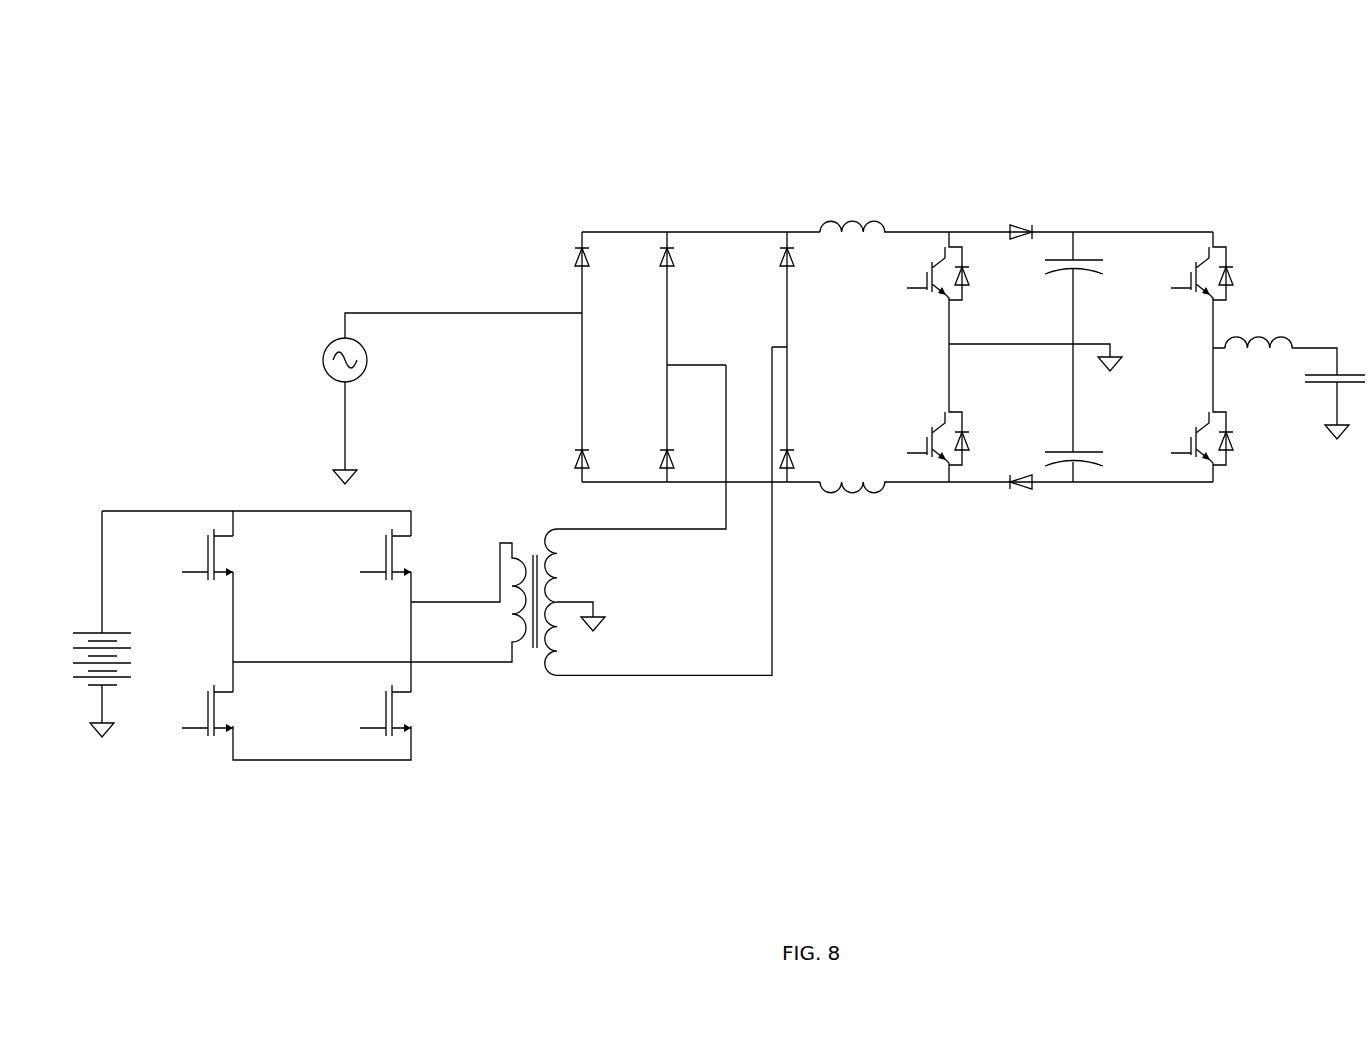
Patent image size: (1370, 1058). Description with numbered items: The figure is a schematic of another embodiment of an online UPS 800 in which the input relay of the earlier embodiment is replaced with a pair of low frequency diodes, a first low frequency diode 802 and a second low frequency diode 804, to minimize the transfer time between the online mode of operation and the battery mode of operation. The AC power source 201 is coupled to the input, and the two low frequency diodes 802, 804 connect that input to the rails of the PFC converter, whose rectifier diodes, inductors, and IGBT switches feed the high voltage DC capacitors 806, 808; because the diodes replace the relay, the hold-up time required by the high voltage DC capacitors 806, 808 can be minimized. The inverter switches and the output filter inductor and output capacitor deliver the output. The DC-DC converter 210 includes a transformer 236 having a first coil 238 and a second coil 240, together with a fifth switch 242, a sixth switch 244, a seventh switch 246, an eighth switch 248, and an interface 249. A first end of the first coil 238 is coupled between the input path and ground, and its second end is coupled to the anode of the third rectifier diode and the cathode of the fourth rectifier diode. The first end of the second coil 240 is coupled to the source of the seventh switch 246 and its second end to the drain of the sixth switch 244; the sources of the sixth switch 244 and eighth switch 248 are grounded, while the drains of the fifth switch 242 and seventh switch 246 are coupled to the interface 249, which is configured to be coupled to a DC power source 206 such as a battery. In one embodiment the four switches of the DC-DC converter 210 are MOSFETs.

The power conversion circuit 800 is at (168, 98).
The AC power source 201 is at (327, 352).
The DC power source 206 is at (102, 632).
The interface 249 is at (152, 512).
The fifth switch (SW5) 242 is at (208, 555).
The sixth switch (SW6) 244 is at (207, 717).
The seventh switch (SW7) 246 is at (387, 557).
The eighth switch (SW8) 248 is at (387, 717).
The DC-DC converter 210 is at (560, 783).
The transformer 236 is at (504, 533).
The first coil 238 is at (548, 582).
The second coil 240 is at (522, 625).
The low frequency diode D1A 802 is at (577, 262).
The low frequency diode D2B 804 is at (578, 463).
The high voltage DC capacitor 806 is at (1083, 270).
The high voltage DC capacitor 808 is at (1090, 450).